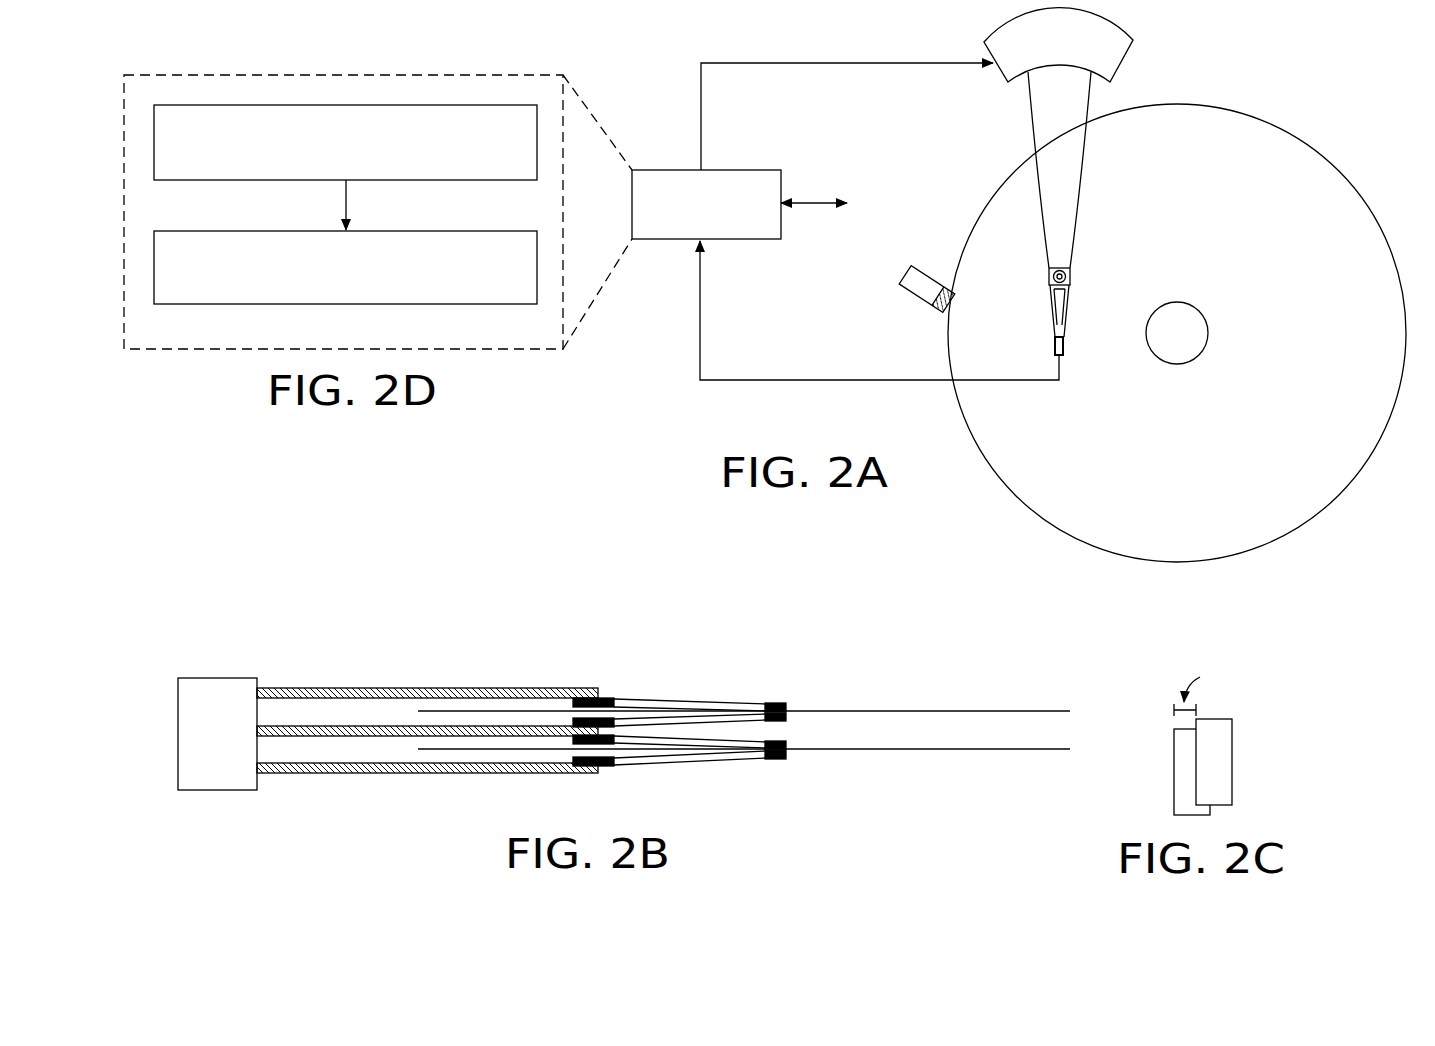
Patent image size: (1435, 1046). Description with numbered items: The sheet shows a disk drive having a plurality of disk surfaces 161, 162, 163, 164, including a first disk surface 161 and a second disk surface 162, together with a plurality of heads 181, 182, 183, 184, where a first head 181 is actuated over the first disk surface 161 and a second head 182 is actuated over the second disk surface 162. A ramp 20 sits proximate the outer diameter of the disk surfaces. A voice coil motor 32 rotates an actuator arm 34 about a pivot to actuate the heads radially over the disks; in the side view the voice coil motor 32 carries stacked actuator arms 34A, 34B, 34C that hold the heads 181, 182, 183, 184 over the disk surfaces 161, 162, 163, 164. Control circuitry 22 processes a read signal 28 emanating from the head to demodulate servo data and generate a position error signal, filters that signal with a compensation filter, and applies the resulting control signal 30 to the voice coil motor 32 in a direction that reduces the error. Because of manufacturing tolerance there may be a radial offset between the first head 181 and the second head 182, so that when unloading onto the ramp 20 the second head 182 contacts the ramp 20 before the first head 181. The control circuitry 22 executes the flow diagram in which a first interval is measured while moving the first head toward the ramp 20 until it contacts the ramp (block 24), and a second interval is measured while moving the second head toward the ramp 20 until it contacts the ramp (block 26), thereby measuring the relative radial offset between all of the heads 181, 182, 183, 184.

In FIG. 2A, the first disk surface 161 is at (1336, 154).
In FIG. 2B, the first disk surface 161 is at (945, 711).
In FIG. 2B, the second disk surface 162 is at (990, 712).
In FIG. 2B, the disk surface 163 is at (993, 749).
In FIG. 2B, the disk surface 164 is at (997, 749).
In FIG. 2A, the first head 181 is at (1051, 343).
In FIG. 2B, the first head 181 is at (809, 693).
In FIG. 2C, the first head 181 is at (1232, 786).
In FIG. 2B, the second head 182 is at (786, 717).
In FIG. 2C, the second head 182 is at (1174, 795).
In FIG. 2B, the head 183 is at (786, 746).
In FIG. 2B, the head 184 is at (786, 755).
In FIG. 2A, the ramp 20 is at (921, 266).
In FIG. 2A, the control circuitry 22 is at (745, 170).
In FIG. 2D, the block 24 is at (453, 180).
In FIG. 2D, the block 26 is at (475, 304).
In FIG. 2A, the read signal 28 is at (808, 380).
In FIG. 2A, the control signal 30 is at (701, 122).
In FIG. 2A, the voice coil motor 32 is at (1002, 77).
In FIG. 2B, the voice coil motor 32 is at (178, 729).
In FIG. 2A, the actuator arm 34 is at (1035, 130).
In FIG. 2B, the actuator arm 34A is at (316, 688).
In FIG. 2B, the actuator arm 34B is at (360, 726).
In FIG. 2B, the actuator arm 34C is at (403, 763).